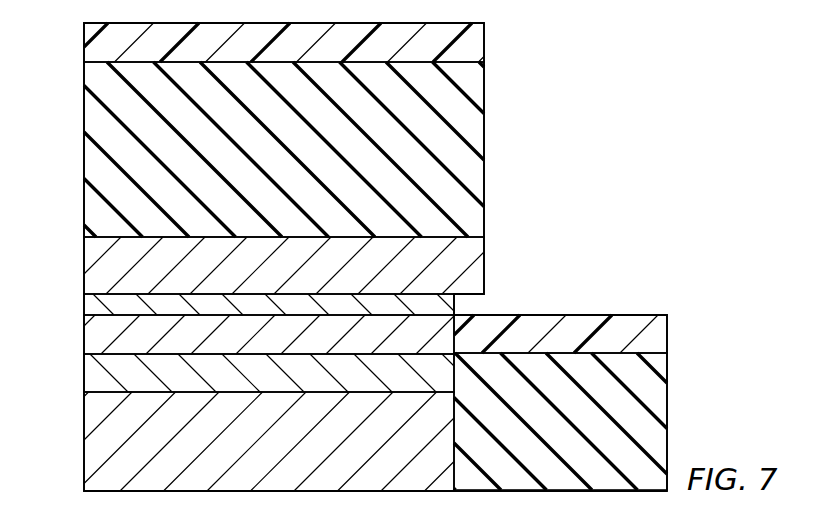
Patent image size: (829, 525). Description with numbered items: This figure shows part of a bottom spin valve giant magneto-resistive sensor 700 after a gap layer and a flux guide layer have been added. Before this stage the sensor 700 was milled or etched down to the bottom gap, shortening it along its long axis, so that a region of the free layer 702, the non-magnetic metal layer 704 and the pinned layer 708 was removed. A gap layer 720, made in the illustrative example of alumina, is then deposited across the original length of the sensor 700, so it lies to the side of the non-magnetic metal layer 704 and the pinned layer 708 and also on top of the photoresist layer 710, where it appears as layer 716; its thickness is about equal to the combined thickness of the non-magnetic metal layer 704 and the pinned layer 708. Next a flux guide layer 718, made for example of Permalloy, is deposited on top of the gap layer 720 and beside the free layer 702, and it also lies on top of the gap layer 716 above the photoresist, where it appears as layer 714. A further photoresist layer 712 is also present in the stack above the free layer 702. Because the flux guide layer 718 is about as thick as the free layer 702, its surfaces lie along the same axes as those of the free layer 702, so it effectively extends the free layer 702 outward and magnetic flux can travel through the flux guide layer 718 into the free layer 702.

The bottom spin valve giant magneto-resistive sensor 700 is at (375, 254).
The free layer 702 is at (84, 340).
The non-magnetic metal layer 704 is at (84, 368).
The pinned layer 708 is at (84, 450).
The photoresist layer 710 is at (84, 254).
The photoresist layer 712 is at (84, 305).
The flux guide layer 714 is at (84, 38).
The gap layer 716 is at (84, 118).
The flux guide layer 718 is at (667, 333).
The gap layer 720 is at (667, 405).